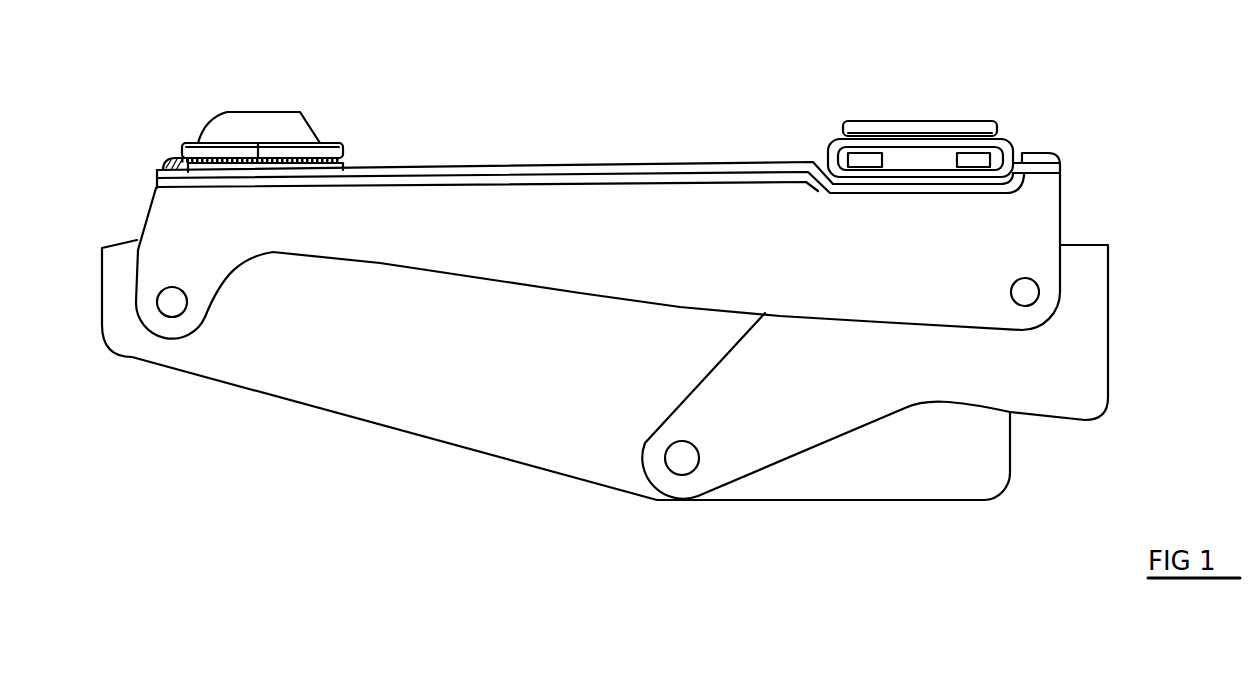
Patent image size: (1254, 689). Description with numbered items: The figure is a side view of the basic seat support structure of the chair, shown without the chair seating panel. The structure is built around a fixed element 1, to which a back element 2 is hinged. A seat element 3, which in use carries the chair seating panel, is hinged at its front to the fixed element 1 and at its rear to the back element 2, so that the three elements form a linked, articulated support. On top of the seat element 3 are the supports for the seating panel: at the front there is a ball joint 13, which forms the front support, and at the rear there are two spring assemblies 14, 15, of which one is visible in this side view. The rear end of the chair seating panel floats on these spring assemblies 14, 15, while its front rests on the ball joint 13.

The fixed element 1 is at (518, 353).
The back element 2 is at (877, 348).
The seat element 3 is at (670, 220).
The ball joint 13 is at (224, 110).
The spring assembly 14 is at (944, 118).
The spring assembly 15 is at (920, 128).